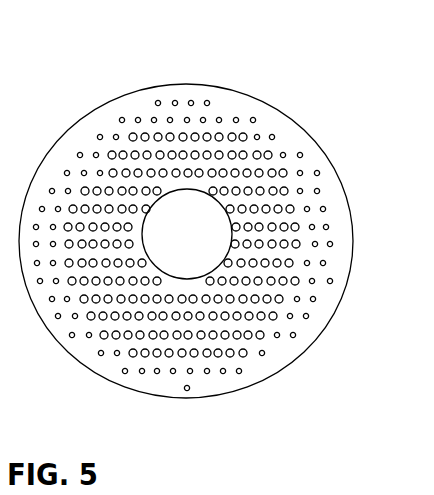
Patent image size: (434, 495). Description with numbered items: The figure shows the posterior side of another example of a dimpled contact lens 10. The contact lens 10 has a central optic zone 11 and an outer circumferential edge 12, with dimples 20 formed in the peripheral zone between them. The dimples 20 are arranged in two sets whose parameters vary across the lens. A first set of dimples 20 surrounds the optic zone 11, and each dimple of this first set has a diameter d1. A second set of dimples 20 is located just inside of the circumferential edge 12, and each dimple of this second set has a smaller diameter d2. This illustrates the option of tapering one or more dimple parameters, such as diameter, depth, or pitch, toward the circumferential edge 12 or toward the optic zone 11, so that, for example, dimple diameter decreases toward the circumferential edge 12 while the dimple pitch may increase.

The contact lens 10 is at (248, 87).
The optic zone 11 is at (179, 240).
The circumferential edge 12 is at (306, 347).
The dimples 20 is at (284, 154).
The diameter of the first set of dimples d1 is at (243, 208).
The diameter of the second set of dimples d2 is at (315, 245).